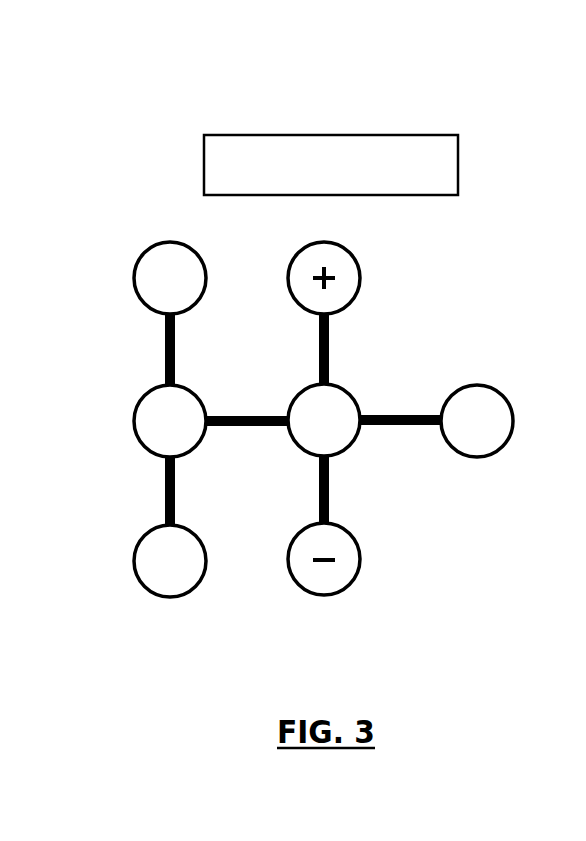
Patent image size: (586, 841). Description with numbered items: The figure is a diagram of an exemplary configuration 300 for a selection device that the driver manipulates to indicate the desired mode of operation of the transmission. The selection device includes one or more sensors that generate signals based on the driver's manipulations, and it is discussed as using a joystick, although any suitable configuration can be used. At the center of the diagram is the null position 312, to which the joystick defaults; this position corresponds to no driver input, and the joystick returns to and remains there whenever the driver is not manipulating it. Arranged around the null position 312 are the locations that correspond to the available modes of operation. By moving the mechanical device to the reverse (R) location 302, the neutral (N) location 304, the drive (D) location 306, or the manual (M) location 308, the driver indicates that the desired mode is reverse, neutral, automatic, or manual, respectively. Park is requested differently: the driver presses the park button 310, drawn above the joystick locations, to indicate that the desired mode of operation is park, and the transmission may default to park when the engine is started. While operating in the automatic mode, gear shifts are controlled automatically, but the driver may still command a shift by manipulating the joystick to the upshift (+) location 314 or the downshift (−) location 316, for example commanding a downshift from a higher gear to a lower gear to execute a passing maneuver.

The exemplary configuration 300 is at (88, 80).
The reverse (R) location 302 is at (205, 276).
The neutral (N) location 304 is at (197, 394).
The drive (D) location 306 is at (197, 533).
The manual (M) location 308 is at (500, 389).
The park button 310 is at (328, 135).
The null position 312 is at (351, 393).
The upshift (+) location 314 is at (358, 275).
The downshift (−) location 316 is at (351, 536).